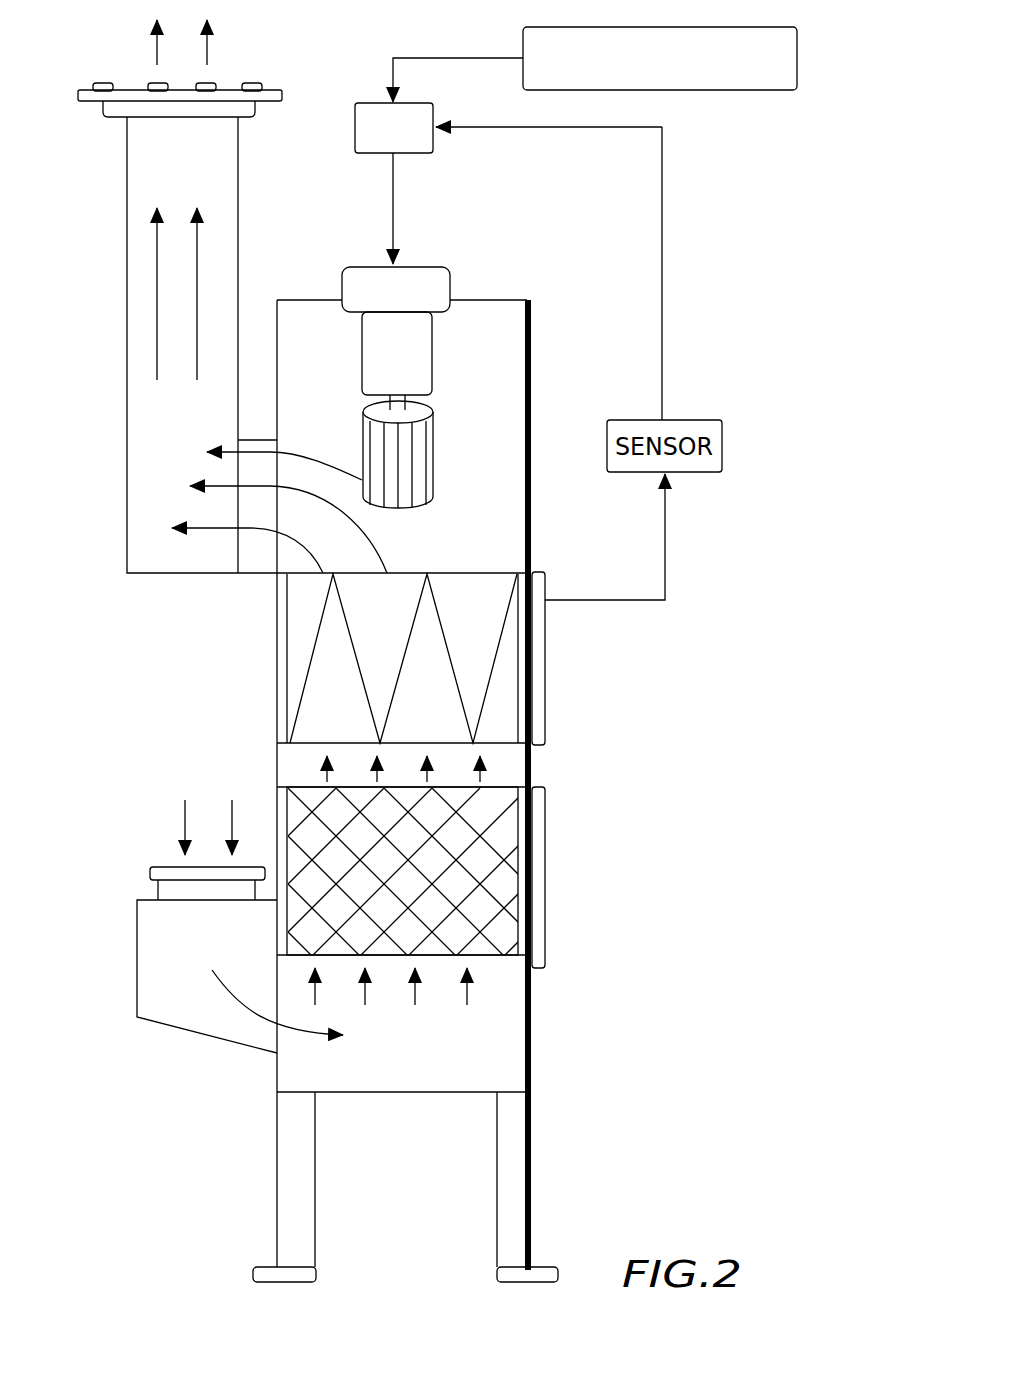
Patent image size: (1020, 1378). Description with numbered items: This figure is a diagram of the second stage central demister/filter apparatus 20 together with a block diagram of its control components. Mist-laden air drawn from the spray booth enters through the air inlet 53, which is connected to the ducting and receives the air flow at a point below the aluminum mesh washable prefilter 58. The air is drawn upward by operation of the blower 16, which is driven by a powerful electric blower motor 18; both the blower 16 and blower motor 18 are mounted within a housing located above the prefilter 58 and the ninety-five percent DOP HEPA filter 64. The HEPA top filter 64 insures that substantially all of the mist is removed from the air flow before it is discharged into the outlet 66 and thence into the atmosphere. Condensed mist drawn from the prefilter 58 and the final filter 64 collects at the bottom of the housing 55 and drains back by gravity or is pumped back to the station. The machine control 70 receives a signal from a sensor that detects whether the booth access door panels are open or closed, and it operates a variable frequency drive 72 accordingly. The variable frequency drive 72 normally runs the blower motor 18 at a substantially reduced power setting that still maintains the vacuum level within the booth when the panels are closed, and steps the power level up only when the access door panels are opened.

The blower 16 is at (435, 440).
The blower motor 18 is at (437, 350).
The central demister/filter apparatus 20 is at (568, 716).
The air inlet 53 is at (150, 867).
The housing 55 is at (282, 677).
The aluminum mesh washable prefilter 58 is at (510, 878).
The HEPA filter 64 is at (510, 673).
The outlet 66 is at (135, 437).
The machine control 70 is at (757, 91).
The variable frequency drive 72 is at (357, 103).